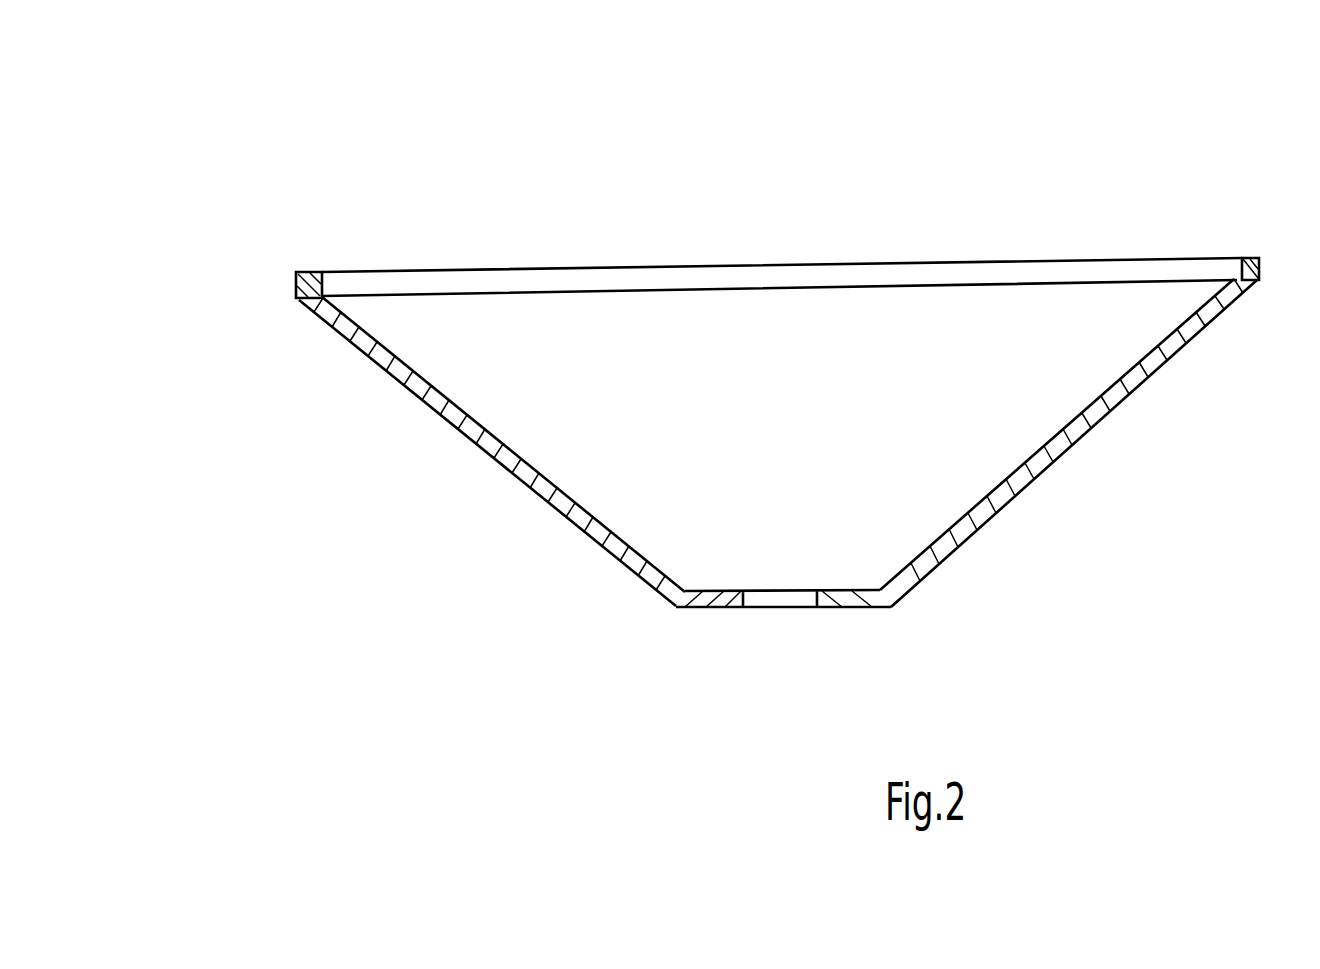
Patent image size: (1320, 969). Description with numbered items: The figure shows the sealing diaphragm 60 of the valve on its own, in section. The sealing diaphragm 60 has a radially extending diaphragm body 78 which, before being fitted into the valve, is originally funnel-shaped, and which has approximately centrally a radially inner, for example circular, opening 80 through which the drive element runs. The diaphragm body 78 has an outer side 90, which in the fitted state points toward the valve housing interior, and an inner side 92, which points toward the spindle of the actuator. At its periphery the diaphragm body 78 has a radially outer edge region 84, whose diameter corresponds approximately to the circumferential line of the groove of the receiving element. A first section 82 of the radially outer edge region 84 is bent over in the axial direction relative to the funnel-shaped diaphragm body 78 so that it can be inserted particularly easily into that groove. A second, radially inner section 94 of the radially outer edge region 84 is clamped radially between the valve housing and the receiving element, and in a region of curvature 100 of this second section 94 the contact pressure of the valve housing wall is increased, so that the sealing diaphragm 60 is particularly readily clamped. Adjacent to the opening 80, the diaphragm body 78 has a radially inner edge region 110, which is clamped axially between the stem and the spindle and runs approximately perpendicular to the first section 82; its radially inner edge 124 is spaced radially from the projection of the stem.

The sealing diaphragm 60 is at (780, 143).
The first section 82 is at (300, 280).
The region of curvature 100 is at (320, 278).
The radially outer edge region 84 is at (272, 306).
The second section 94 is at (318, 302).
The outer side 90 is at (487, 455).
The diaphragm body 78 is at (540, 487).
The inner side 92 is at (525, 460).
The opening 80 is at (763, 600).
The radially inner edge region 110 is at (881, 611).
The radially inner edge 124 is at (830, 588).